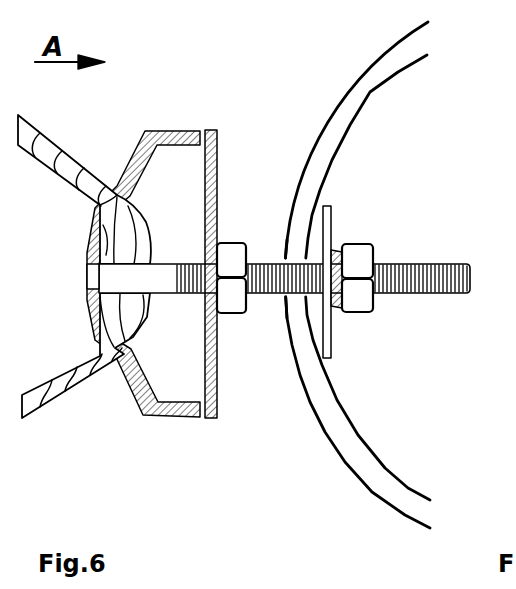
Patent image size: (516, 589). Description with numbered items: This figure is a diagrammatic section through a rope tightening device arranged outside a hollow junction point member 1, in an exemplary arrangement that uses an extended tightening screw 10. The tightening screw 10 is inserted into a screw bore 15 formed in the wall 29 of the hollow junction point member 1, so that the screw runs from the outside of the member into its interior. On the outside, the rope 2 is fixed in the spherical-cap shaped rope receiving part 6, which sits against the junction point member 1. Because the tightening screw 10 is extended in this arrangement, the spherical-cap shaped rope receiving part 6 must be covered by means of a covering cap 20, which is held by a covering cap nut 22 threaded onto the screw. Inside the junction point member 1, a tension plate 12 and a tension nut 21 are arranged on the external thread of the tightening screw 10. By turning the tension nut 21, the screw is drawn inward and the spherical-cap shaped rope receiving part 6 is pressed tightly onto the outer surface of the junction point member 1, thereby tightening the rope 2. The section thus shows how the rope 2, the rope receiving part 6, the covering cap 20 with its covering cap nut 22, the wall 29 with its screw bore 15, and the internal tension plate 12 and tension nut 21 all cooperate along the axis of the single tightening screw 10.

The hollow junction point member 1 is at (422, 47).
The wall 29 is at (370, 93).
The spherical-cap shaped rope receiving part 6 is at (175, 118).
The rope 2 is at (31, 156).
The tightening screw 10 is at (122, 278).
The covering cap 20 is at (219, 156).
The covering cap nut 22 is at (230, 315).
The tension plate 12 is at (334, 228).
The tension nut 21 is at (367, 313).
The screw bore 15 is at (282, 258).